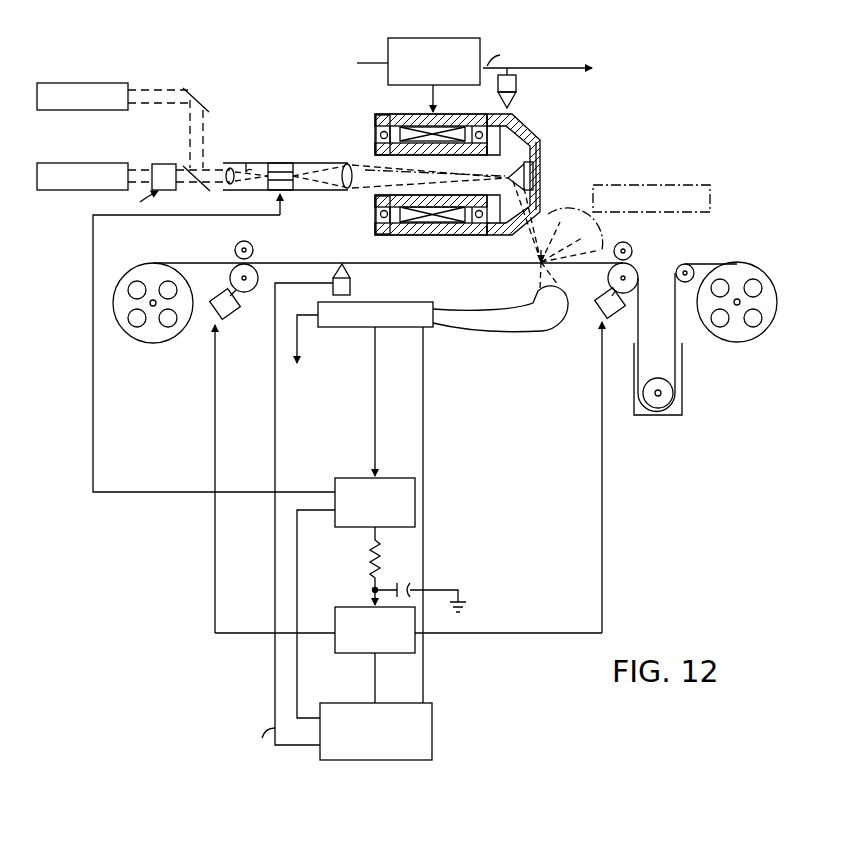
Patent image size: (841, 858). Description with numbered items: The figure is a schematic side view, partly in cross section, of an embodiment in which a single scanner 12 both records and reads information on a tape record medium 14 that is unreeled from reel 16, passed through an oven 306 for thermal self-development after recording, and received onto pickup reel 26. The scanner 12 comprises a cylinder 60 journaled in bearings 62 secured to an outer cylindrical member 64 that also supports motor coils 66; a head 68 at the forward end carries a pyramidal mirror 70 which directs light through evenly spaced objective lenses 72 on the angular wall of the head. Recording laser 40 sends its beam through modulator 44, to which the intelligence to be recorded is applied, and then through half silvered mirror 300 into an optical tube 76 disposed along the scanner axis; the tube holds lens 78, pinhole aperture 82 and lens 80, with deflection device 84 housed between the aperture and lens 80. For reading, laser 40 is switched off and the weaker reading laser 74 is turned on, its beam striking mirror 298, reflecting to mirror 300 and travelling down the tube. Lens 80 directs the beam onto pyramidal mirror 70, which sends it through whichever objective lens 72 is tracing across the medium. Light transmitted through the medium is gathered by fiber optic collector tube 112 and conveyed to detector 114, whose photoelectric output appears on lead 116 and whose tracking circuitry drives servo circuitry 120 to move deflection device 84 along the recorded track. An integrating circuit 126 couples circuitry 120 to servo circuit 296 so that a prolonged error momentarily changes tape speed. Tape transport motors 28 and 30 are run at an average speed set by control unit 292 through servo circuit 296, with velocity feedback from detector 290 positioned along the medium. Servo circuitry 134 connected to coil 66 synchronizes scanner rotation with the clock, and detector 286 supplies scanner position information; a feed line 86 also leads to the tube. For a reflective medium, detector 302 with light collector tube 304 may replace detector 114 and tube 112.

The reading laser 74 is at (88, 83).
The mirror 298 is at (192, 90).
The half silvered mirror 300 is at (187, 165).
The laser 40 is at (75, 163).
The modulator 44 is at (156, 164).
The lens 78 is at (226, 170).
The optical tube 76 is at (318, 163).
The pinhole aperture 82 is at (249, 164).
The deflection device 84 is at (280, 165).
The lens 80 is at (350, 162).
The lens positioning drive 86 is at (289, 190).
The servo mechanism circuitry 134 is at (466, 38).
The detector 286 is at (518, 95).
The scanner 12 is at (446, 113).
The outer cylindrical member 64 is at (377, 115).
The cylinder 60 is at (386, 190).
The bearings 62 is at (381, 208).
The motor coils 66 is at (416, 220).
The objective lenses 72 is at (538, 128).
The head 68 is at (524, 233).
The pyramidal mirror 70 is at (540, 170).
The detector 302 is at (645, 215).
The light collector tube 304 is at (588, 235).
The record medium 14 is at (354, 263).
The reel 16 is at (140, 263).
The pickup reel 26 is at (758, 272).
The tape transport motor 28 is at (228, 318).
The tape transport motor 30 is at (592, 306).
The oven 306 is at (683, 415).
The detector 290 is at (350, 286).
The detector 114 is at (427, 327).
The output lead 116 is at (300, 346).
The fiber optic collector tube 112 is at (508, 332).
The servo mechanism driving circuitry 120 is at (346, 478).
The integrating circuit 126 is at (345, 568).
The servo mechanism driving circuit 296 is at (335, 655).
The control unit 292 is at (432, 745).